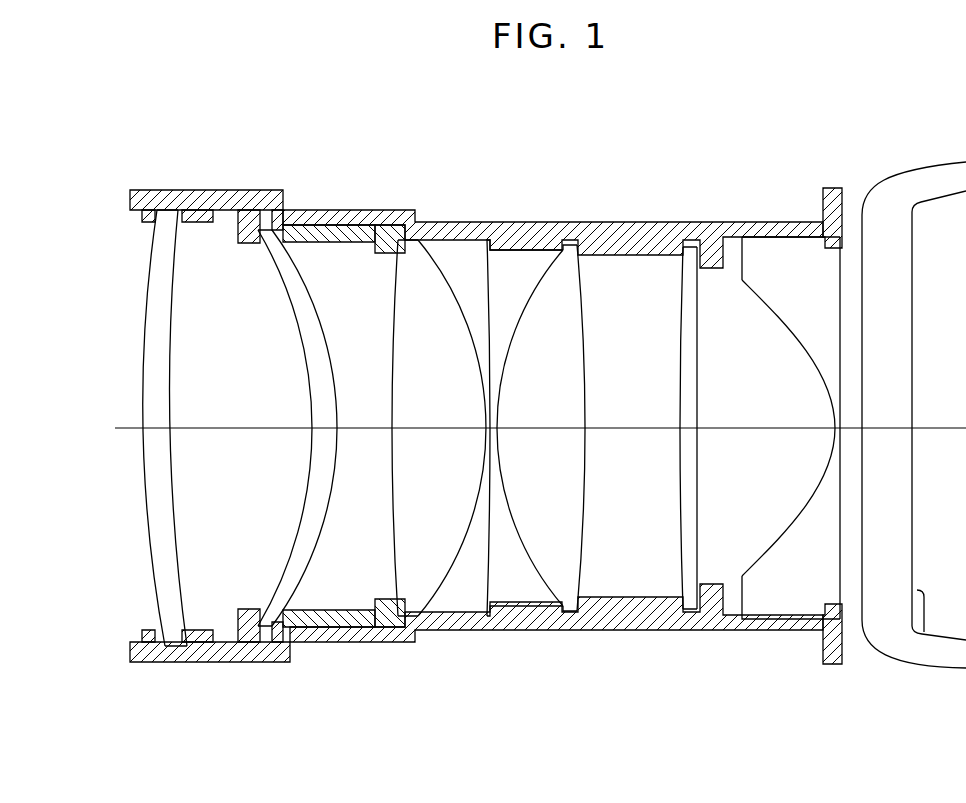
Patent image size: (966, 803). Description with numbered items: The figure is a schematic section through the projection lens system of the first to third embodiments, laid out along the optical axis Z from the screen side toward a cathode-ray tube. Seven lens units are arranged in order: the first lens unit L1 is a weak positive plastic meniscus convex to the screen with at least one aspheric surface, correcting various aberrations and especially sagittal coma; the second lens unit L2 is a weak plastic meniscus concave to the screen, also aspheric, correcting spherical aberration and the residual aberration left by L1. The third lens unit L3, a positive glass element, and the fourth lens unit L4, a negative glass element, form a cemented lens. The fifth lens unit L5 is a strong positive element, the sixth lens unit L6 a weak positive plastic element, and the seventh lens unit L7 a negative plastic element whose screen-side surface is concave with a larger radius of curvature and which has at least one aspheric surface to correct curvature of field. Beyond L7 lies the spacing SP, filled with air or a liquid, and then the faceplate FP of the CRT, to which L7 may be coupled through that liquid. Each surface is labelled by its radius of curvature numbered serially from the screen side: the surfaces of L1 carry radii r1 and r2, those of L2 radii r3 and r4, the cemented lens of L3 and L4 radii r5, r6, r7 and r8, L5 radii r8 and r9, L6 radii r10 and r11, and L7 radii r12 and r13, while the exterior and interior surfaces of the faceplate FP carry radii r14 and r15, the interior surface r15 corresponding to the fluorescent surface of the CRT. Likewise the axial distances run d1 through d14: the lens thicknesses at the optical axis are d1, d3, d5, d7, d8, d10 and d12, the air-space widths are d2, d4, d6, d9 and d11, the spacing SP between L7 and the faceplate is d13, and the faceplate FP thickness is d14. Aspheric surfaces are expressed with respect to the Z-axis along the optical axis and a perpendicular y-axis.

The first lens unit L1 is at (177, 417).
The second lens unit L2 is at (292, 417).
The third lens unit L3 is at (429, 417).
The fourth lens unit L4 is at (516, 417).
The fifth lens unit L5 is at (598, 417).
The sixth lens unit L6 is at (710, 417).
The seventh lens unit L7 is at (801, 417).
The spacing SP is at (850, 232).
The faceplate FP is at (912, 413).
The Z-axis Z is at (935, 427).
The radius of curvature of first surface r1 is at (156, 572).
The radius of curvature of second surface r2 is at (182, 612).
The radius of curvature of third surface r3 is at (283, 575).
The radius of curvature of fourth surface r4 is at (298, 598).
The radius of curvature of fifth surface r5 is at (393, 600).
The radius of curvature of sixth surface r6 is at (450, 580).
The radius of curvature of seventh surface r7 is at (492, 575).
The radius of curvature of eighth surface r8 is at (543, 580).
The radius of curvature of ninth surface r9 is at (583, 582).
The radius of curvature of tenth surface r10 is at (681, 605).
The radius of curvature of eleventh surface r11 is at (712, 595).
The radius of curvature of twelfth surface r12 is at (765, 562).
The radius of curvature of thirteenth surface r13 is at (845, 565).
The radius of curvature of faceplate exterior surface r14 is at (859, 598).
The radius of curvature of faceplate interior surface r15 is at (925, 600).
The axial thickness d1 is at (152, 427).
The air space width d2 is at (248, 427).
The axial thickness d3 is at (320, 427).
The air space width d4 is at (362, 432).
The axial thickness d5 is at (427, 427).
The axial thickness or air space width d6 is at (487, 430).
The axial thickness d7 is at (497, 427).
The axial thickness d8 is at (537, 432).
The air space width d9 is at (627, 427).
The axial thickness d10 is at (682, 430).
The air space width d11 is at (748, 427).
The axial thickness d12 is at (833, 432).
The spacing width d13 is at (858, 427).
The faceplate thickness d14 is at (884, 432).